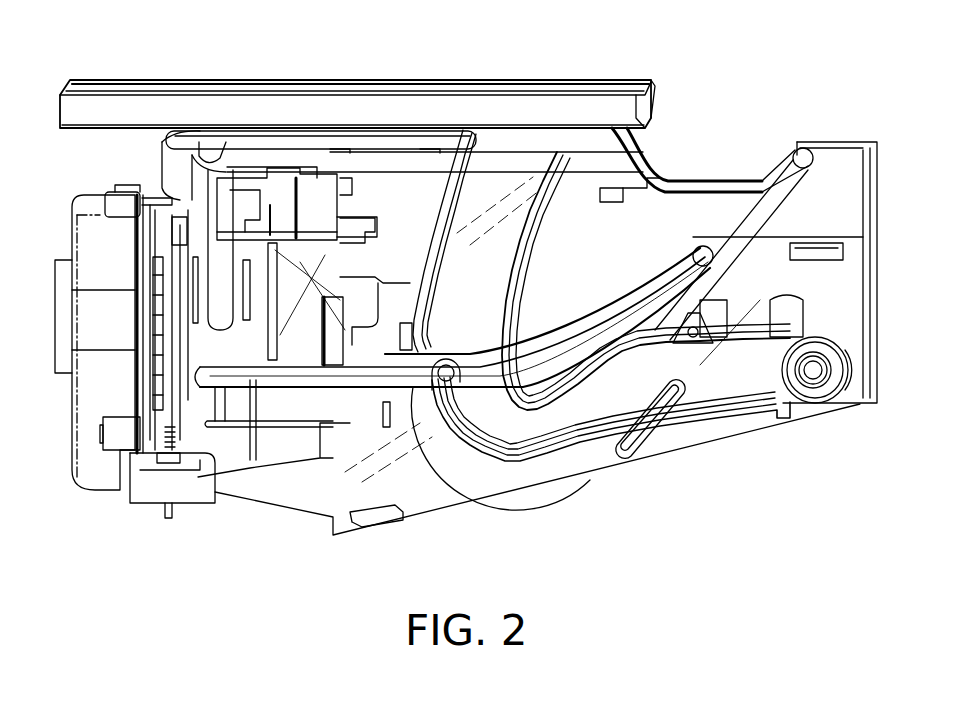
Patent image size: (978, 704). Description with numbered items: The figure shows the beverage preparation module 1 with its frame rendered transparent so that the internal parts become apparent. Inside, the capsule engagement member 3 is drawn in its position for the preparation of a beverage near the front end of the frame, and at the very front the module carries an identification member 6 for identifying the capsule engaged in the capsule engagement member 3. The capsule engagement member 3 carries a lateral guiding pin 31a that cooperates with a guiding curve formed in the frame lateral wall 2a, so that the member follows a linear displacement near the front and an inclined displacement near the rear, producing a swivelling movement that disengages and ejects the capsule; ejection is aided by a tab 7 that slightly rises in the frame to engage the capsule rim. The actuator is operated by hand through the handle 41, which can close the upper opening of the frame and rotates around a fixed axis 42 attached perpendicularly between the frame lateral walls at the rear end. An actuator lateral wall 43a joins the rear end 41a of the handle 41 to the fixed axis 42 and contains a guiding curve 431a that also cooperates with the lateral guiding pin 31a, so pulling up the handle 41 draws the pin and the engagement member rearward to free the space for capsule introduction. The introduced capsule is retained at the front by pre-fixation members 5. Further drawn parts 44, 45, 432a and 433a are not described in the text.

The module 1 is at (722, 82).
The frame lateral wall 2a is at (852, 275).
The capsule engagement member 3 is at (278, 407).
The pre-fixation members 5 is at (222, 200).
The identification member 6 is at (82, 420).
The tab 7 is at (330, 365).
The lateral guiding pin 31a is at (447, 380).
The handle 41 is at (330, 86).
The rear end of the actuator handle 41a is at (640, 84).
The fixed axis 42 is at (830, 385).
The actuator lateral wall 43a is at (700, 405).
The link 44 is at (712, 343).
The connecting rod 45 is at (772, 340).
The guiding curve 431a is at (585, 420).
The boss 432a is at (855, 360).
The pin hole 433a is at (795, 378).